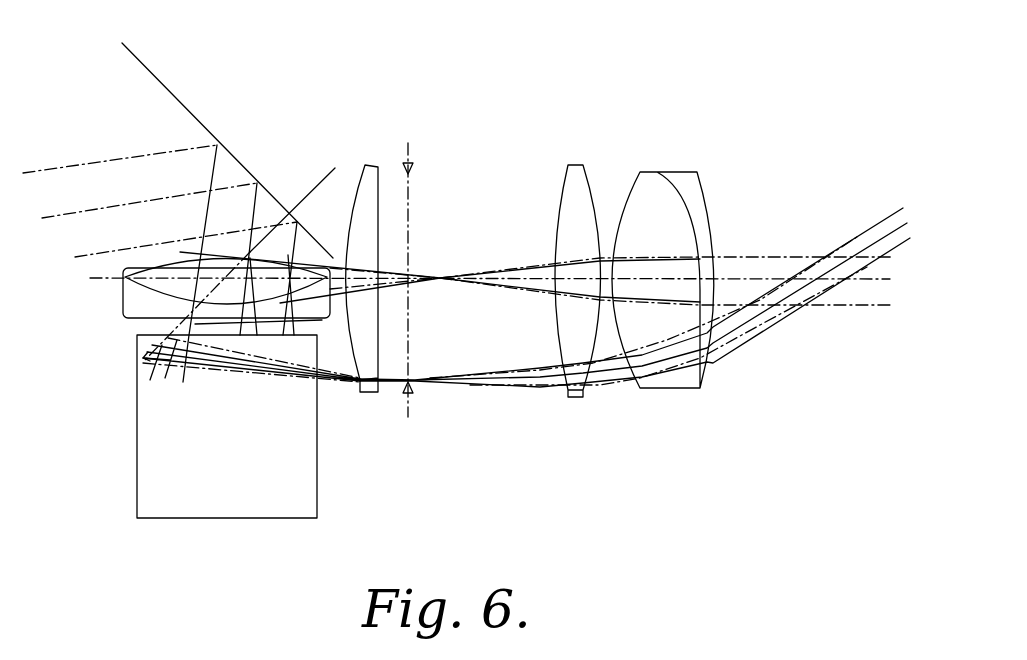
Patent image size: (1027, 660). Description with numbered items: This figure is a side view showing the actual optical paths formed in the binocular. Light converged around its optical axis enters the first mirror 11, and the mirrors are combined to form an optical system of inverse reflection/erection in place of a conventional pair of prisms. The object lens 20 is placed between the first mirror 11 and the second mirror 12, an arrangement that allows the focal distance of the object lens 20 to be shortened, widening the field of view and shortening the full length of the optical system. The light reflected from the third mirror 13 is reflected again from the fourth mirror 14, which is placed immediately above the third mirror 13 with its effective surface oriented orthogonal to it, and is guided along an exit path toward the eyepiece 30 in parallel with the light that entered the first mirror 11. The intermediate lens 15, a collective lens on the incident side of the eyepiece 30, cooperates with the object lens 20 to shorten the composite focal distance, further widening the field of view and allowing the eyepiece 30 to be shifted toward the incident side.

The first mirror 11 is at (180, 98).
The second mirror 12 is at (298, 452).
The third mirror 13 is at (137, 447).
The fourth mirror 14 is at (317, 187).
The intermediate lens 15 is at (368, 187).
The object lens 20 is at (123, 295).
The eyepiece 30 is at (660, 404).